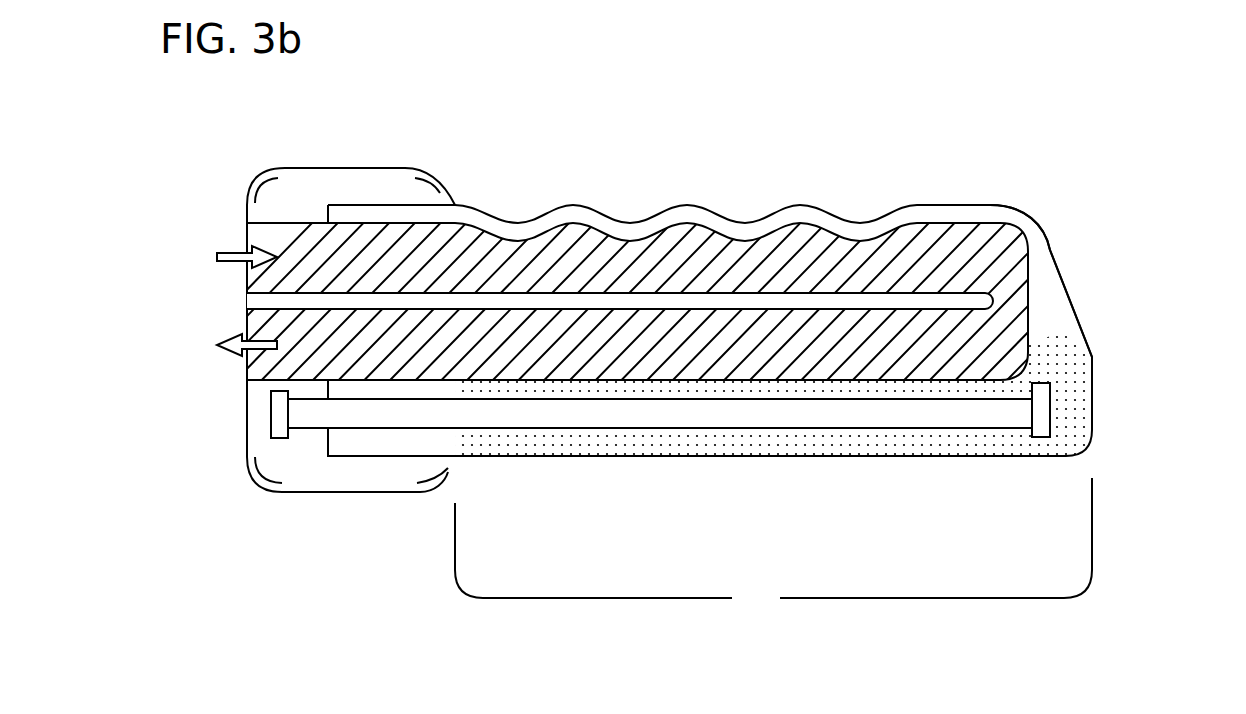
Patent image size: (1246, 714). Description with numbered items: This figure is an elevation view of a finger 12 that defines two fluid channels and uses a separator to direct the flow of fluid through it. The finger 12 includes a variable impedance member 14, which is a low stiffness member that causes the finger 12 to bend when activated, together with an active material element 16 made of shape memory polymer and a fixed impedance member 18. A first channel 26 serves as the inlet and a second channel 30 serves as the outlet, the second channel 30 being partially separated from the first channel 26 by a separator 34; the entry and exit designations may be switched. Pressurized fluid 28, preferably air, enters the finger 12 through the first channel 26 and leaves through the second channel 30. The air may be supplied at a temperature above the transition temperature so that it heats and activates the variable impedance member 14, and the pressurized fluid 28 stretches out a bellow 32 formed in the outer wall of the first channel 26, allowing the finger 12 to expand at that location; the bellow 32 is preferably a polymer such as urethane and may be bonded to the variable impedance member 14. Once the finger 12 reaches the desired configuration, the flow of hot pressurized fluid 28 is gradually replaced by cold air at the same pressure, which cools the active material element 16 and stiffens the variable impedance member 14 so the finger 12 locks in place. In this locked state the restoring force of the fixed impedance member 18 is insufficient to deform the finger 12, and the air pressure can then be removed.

The finger 12 is at (1152, 185).
The variable impedance member 14 is at (710, 410).
The active material element 16 is at (668, 446).
The fixed impedance member 18 is at (271, 412).
The first channel 26 is at (988, 217).
The pressurized fluid 28 is at (768, 262).
The second channel 30 is at (1030, 342).
The bellow 32 is at (675, 198).
The separator 34 is at (495, 295).